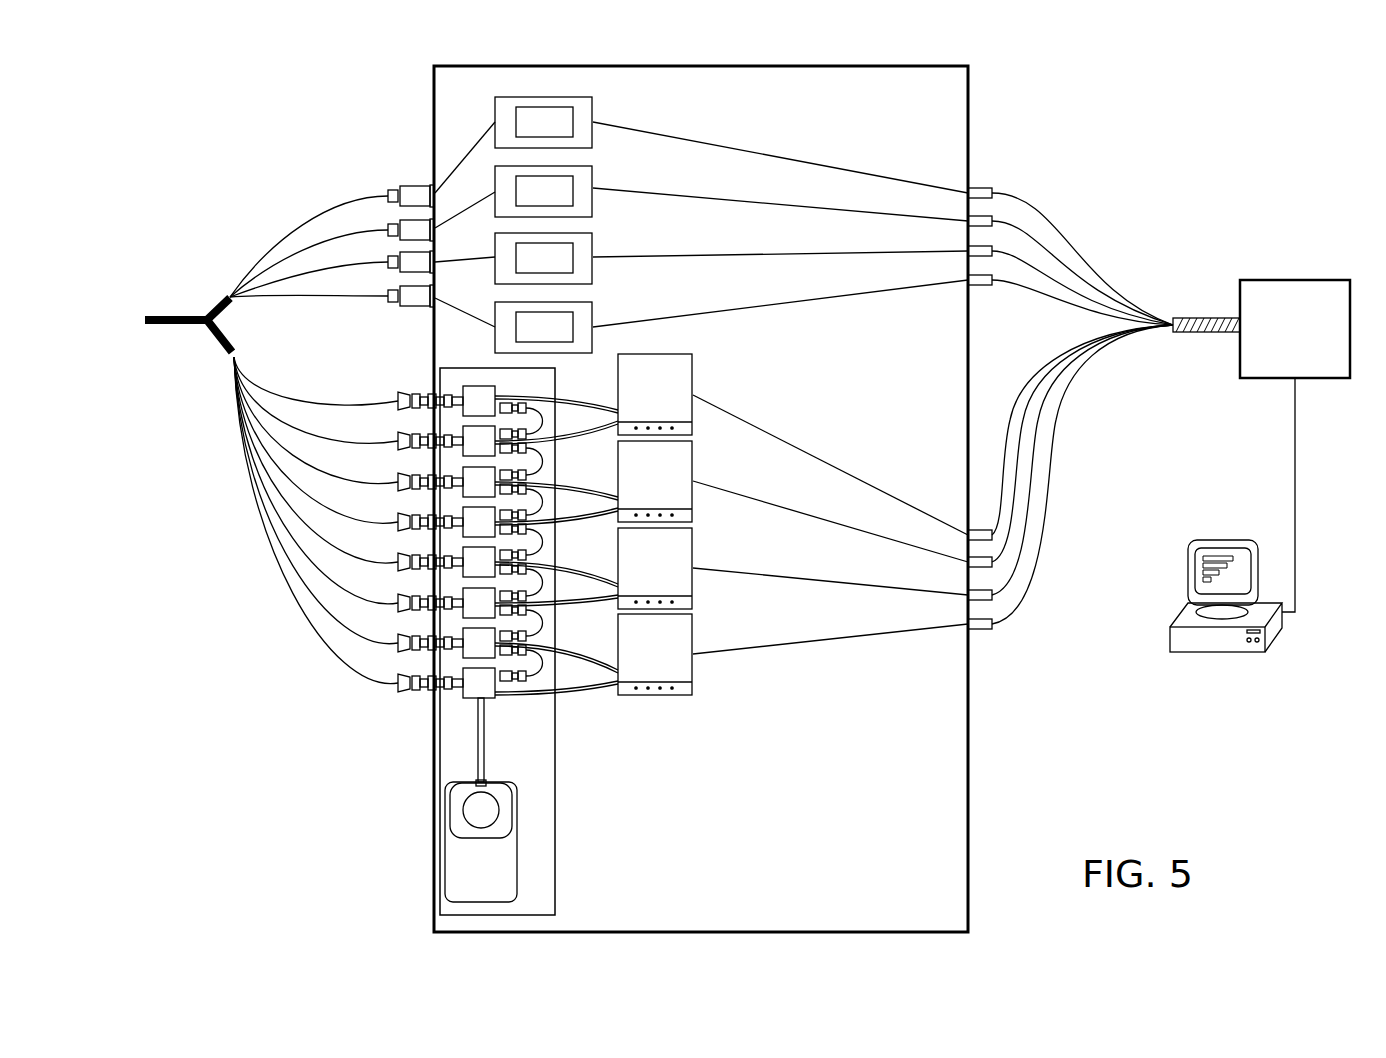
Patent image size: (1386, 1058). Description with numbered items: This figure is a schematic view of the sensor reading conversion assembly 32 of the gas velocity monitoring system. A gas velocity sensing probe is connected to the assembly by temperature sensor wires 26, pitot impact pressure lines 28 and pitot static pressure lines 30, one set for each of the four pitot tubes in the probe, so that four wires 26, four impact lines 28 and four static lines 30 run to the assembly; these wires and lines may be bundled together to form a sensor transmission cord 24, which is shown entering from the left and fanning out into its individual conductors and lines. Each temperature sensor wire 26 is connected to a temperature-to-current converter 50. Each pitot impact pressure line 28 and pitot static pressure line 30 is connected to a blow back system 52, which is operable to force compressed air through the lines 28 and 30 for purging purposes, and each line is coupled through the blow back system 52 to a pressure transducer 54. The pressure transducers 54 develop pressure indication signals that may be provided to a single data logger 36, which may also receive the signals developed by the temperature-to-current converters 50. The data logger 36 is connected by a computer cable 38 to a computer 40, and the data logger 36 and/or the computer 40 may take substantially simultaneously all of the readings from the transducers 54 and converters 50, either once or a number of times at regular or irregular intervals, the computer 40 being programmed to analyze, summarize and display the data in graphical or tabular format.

The sensor transmission cord 24 is at (172, 316).
The temperature sensor wire 26 is at (316, 223).
The pitot impact pressure line 28 is at (372, 412).
The pitot static pressure line 30 is at (331, 447).
The sensor reading conversion assembly 32 is at (440, 828).
The data logger 36 is at (1297, 280).
The computer cable 38 is at (1295, 467).
The computer 40 is at (1211, 640).
The temperature-to-current converter 50 is at (592, 112).
The blow back system 52 is at (487, 700).
The pressure transducer 54 is at (685, 374).